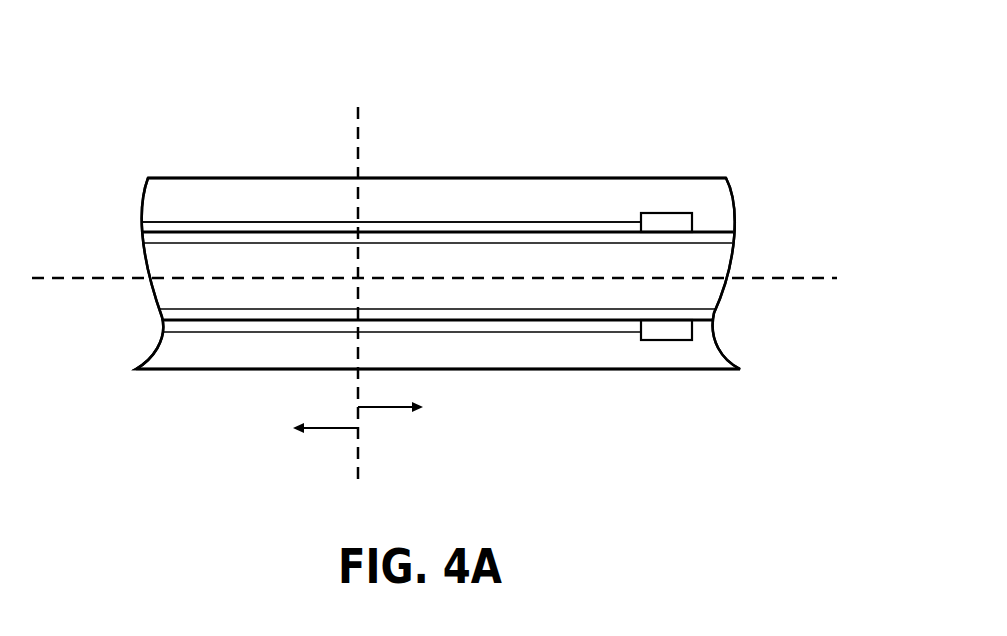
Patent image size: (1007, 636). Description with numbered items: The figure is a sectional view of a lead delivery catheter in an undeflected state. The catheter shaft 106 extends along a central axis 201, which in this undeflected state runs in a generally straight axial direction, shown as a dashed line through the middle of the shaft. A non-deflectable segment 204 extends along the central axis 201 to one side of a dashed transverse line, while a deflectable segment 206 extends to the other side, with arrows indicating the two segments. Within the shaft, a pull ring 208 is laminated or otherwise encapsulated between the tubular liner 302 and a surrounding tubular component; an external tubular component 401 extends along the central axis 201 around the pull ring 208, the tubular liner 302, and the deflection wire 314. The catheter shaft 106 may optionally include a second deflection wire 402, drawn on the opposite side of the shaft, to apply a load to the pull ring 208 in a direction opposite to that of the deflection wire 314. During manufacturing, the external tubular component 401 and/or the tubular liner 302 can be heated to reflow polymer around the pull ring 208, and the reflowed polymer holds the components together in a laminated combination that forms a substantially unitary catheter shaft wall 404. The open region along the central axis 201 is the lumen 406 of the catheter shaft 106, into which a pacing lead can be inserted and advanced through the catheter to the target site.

The catheter shaft 106 is at (667, 51).
The catheter shaft wall 404 is at (535, 173).
The external tubular component 401 is at (200, 188).
The tubular liner 302 is at (265, 239).
The deflection wire 314 is at (437, 222).
The pull ring 208 is at (668, 213).
The lumen 406 is at (180, 272).
The second deflection wire 402 is at (592, 333).
The central axis 201 is at (788, 277).
The non-deflectable segment 204 is at (304, 422).
The deflectable segment 206 is at (412, 402).